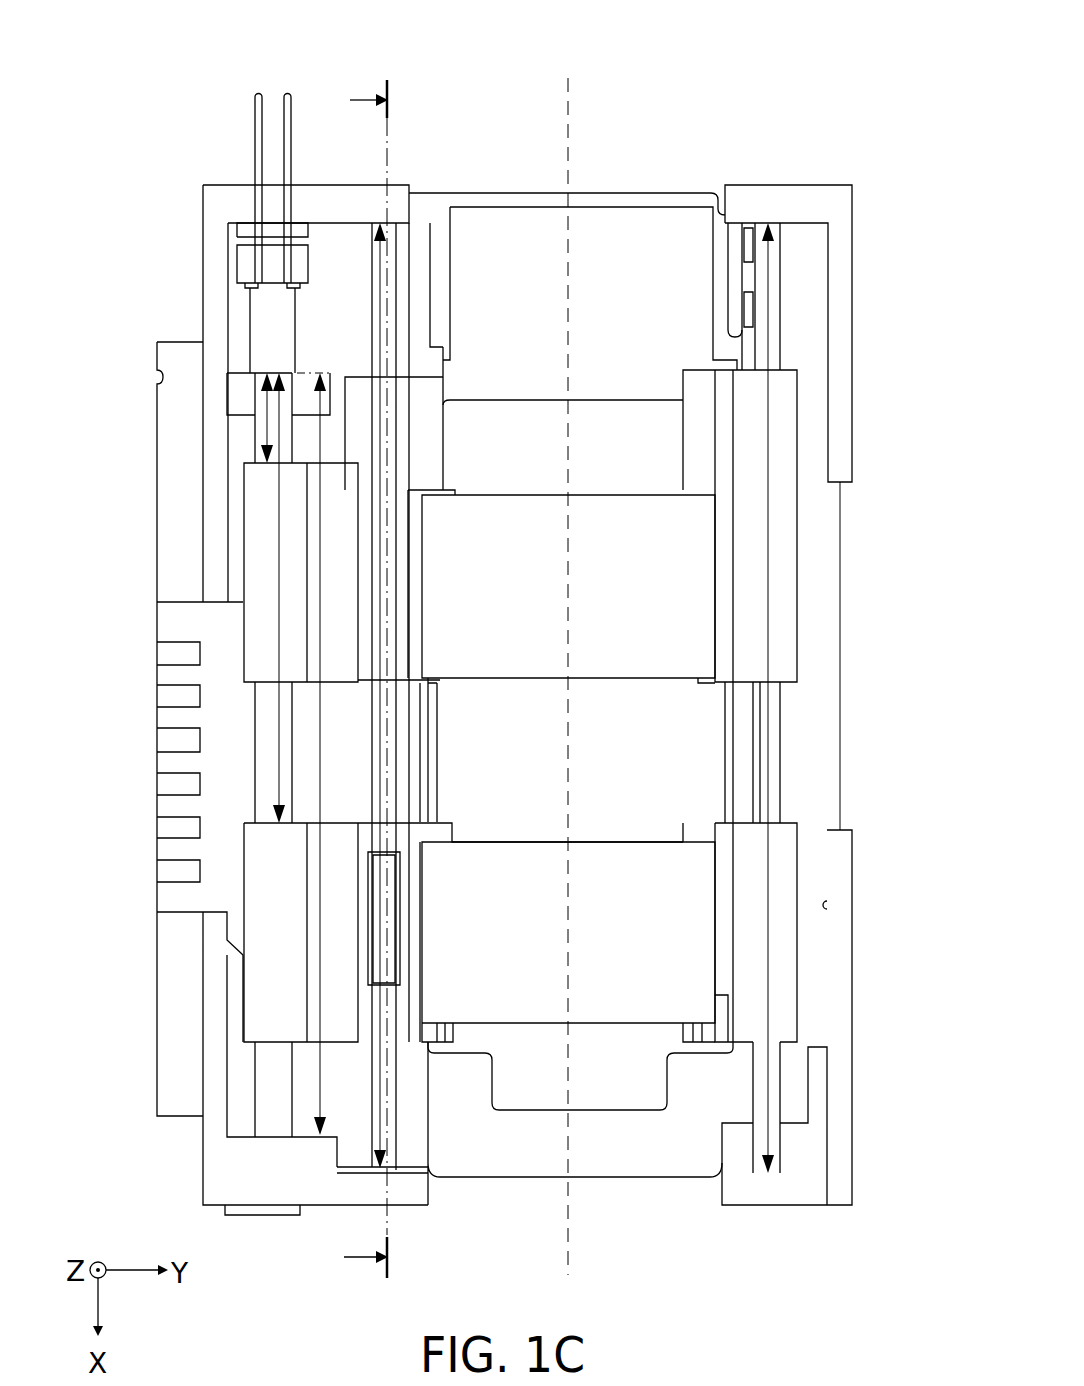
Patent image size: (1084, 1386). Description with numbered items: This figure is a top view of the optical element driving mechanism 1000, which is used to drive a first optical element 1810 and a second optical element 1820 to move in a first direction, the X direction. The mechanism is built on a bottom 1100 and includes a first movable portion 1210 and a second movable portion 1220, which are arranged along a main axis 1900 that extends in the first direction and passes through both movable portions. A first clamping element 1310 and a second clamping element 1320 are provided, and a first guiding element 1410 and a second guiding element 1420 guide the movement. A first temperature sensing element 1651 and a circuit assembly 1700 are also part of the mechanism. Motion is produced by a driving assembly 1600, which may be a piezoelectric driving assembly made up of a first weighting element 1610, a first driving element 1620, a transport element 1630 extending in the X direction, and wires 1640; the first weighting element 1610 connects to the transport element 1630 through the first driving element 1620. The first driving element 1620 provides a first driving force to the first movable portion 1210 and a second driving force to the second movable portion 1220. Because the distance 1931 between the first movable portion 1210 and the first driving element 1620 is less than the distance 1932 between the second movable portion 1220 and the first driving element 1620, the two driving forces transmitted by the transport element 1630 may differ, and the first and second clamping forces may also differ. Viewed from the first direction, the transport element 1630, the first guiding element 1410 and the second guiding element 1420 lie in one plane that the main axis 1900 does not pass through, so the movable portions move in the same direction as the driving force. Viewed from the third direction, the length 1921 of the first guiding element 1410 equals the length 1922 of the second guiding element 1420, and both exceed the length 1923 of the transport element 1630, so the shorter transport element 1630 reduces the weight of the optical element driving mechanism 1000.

The optical element driving mechanism 1000 is at (146, 29).
The bottom 1100 is at (214, 564).
The first movable portion 1210 is at (790, 983).
The second movable portion 1220 is at (357, 390).
The first clamping element 1310 is at (262, 986).
The second clamping element 1320 is at (257, 505).
The first guiding element 1410 is at (778, 748).
The second guiding element 1420 is at (373, 722).
The driving assembly 1600 is at (264, 1090).
The first weighting element 1610 is at (241, 265).
The first driving element 1620 is at (260, 327).
The transport element 1630 is at (262, 765).
The wires 1640 is at (255, 129).
The first temperature sensing element 1651 is at (241, 231).
The circuit assembly 1700 is at (214, 850).
The first optical element 1810 is at (680, 929).
The second optical element 1820 is at (678, 585).
The main axis 1900 is at (570, 659).
The length of the first guiding element 1921 is at (768, 509).
The length of the second guiding element 1922 is at (380, 1107).
The length of the transport element 1923 is at (320, 898).
The distance between the first movable portion and the first driving element 1931 is at (260, 429).
The distance between the second movable portion and the first driving element 1932 is at (280, 627).